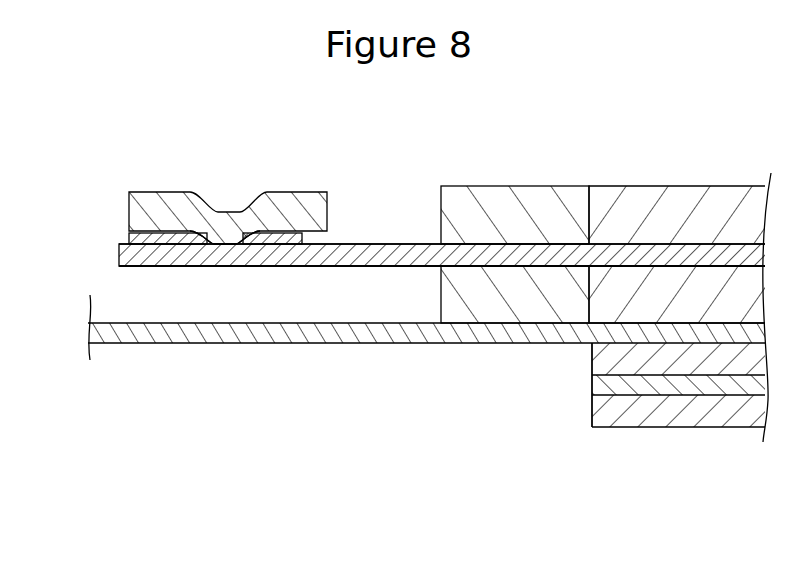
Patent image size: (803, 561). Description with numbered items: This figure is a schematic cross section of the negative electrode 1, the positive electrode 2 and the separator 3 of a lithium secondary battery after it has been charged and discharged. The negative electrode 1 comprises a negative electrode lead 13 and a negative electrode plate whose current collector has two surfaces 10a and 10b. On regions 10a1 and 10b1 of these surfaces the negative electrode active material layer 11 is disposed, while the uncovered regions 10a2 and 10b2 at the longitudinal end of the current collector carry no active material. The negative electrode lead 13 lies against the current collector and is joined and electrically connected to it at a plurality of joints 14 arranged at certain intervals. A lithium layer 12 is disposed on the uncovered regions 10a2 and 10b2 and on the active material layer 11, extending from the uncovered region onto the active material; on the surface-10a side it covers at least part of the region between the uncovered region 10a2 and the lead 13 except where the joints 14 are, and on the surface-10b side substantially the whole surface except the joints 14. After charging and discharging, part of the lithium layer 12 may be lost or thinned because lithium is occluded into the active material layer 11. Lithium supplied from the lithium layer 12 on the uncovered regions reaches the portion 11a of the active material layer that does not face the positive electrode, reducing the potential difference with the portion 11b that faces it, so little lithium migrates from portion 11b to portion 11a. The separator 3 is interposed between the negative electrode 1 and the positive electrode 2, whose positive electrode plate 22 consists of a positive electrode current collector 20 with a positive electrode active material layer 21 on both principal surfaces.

The negative electrode 1 is at (124, 167).
The positive electrode 2 is at (649, 474).
The separator 3 is at (297, 343).
The surface of negative electrode current collector 10a is at (480, 133).
The region of surface 10a 10a1 is at (477, 243).
The uncovered region 10a2 is at (364, 244).
The surface of negative electrode current collector 10b is at (492, 388).
The region of surface 10b 10b1 is at (460, 266).
The uncovered region 10b2 is at (375, 266).
The negative electrode active material layer 11 is at (603, 204).
The portion of negative electrode active material layer not facing positive electrod 11a is at (531, 186).
The portion of negative electrode active material layer facing positive electrode ac 11b is at (677, 223).
The lithium layer 12 is at (127, 237).
The negative electrode lead 13 is at (304, 192).
The joint 14 is at (226, 244).
The positive electrode current collector 20 is at (678, 416).
The positive electrode active material layer 21 is at (748, 428).
The positive electrode plate 22 is at (601, 437).